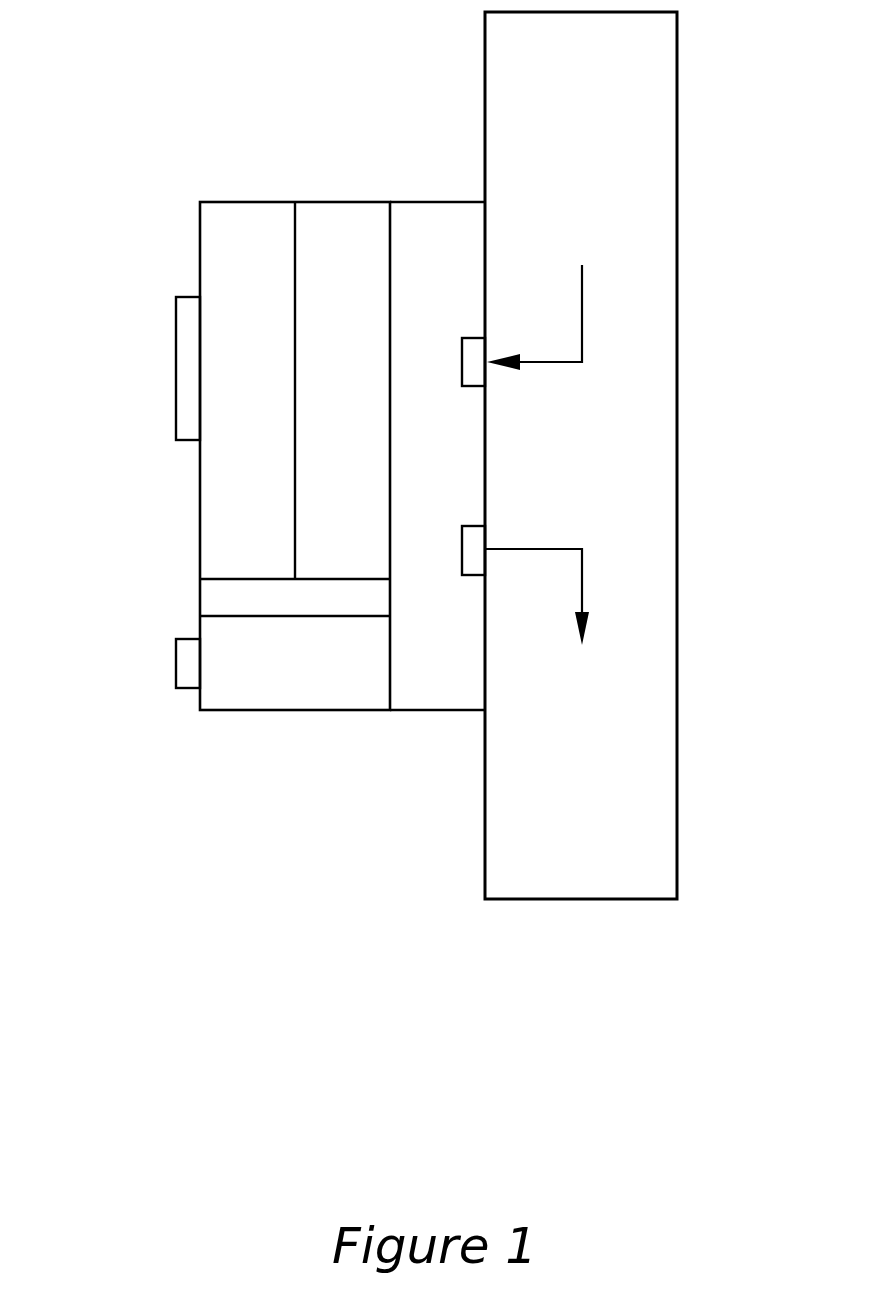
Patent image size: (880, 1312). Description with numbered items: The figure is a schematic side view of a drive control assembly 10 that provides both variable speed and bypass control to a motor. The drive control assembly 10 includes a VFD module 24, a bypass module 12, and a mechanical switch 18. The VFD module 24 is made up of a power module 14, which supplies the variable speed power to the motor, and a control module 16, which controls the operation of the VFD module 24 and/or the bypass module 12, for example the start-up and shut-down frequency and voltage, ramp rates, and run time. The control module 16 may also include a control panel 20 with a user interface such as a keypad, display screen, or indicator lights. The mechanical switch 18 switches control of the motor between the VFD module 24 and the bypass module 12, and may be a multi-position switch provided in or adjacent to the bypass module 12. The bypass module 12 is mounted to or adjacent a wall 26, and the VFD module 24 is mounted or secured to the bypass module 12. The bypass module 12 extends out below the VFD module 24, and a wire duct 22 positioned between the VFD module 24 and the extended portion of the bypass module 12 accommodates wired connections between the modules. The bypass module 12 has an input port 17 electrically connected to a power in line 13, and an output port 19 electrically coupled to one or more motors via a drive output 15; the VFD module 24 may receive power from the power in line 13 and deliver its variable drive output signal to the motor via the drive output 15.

The drive control assembly 10 is at (170, 155).
The bypass module 12 is at (437, 690).
The power in line 13 is at (582, 313).
The power module 14 is at (320, 267).
The drive output 15 is at (582, 585).
The control module 16 is at (225, 230).
The input port 17 is at (486, 386).
The mechanical switch 18 is at (176, 662).
The output port 19 is at (485, 524).
The control panel 20 is at (176, 368).
The wire duct 22 is at (212, 600).
The VFD module 24 is at (390, 202).
The wall 26 is at (656, 100).